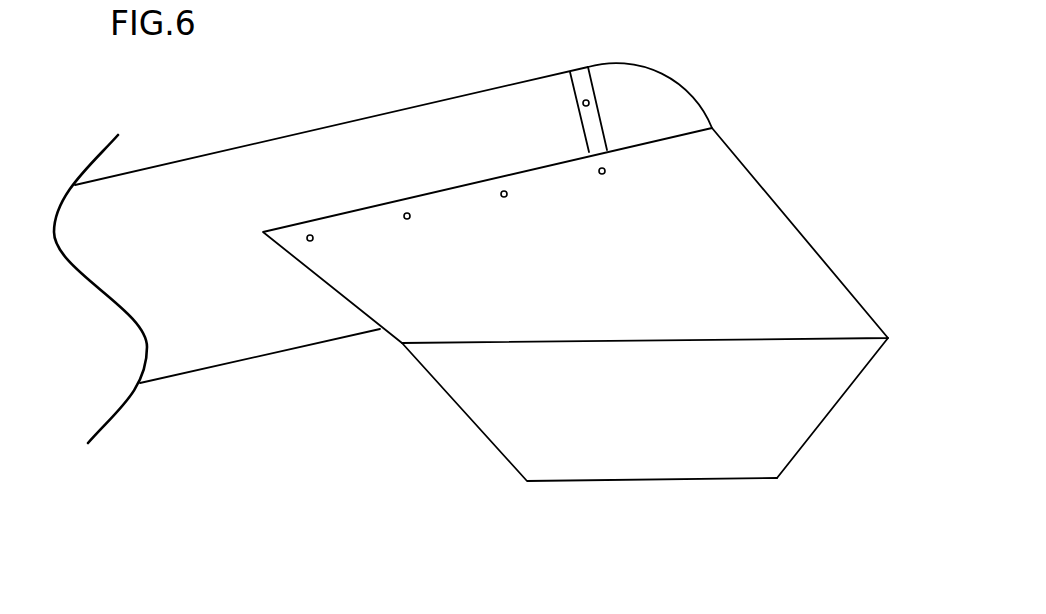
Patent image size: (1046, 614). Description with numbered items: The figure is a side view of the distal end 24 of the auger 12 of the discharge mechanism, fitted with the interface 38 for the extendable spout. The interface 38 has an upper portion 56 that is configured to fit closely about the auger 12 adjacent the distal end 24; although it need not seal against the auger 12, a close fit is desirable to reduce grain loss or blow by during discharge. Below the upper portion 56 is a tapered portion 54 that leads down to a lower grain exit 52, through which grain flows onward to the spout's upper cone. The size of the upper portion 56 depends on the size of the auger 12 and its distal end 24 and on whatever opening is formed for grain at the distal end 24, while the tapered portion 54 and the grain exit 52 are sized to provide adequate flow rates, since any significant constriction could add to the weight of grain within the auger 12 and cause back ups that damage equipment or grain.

The auger 12 is at (175, 280).
The distal end 24 is at (645, 83).
The interface 38 is at (584, 327).
The grain exit 52 is at (688, 482).
The tapered portion 54 is at (778, 405).
The upper portion 56 is at (708, 215).